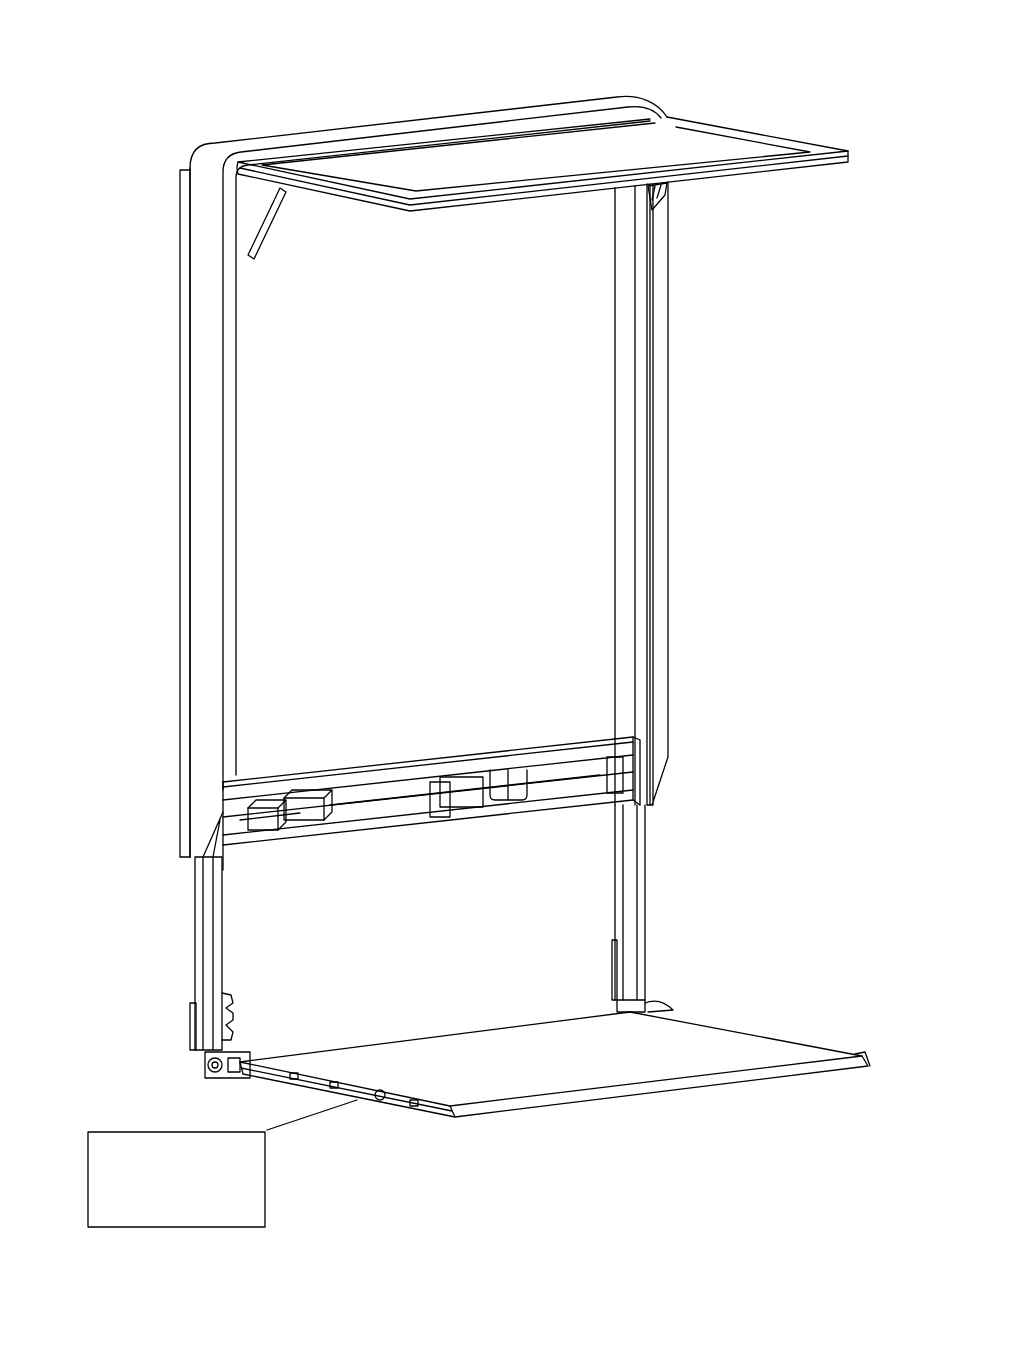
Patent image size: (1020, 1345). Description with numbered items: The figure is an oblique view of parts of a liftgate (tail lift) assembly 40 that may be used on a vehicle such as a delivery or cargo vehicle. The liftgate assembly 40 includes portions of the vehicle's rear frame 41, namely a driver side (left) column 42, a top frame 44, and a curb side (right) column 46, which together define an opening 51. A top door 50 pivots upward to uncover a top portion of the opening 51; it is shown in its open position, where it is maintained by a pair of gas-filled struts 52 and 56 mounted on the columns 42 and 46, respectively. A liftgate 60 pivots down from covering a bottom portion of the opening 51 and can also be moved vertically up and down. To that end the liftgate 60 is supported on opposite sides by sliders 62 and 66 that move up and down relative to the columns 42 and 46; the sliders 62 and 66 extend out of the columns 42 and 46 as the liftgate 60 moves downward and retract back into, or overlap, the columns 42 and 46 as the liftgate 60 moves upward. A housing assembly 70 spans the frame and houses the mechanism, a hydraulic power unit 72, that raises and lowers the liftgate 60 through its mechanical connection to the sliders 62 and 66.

The liftgate assembly 40 is at (228, 62).
The rear frame 41 is at (138, 210).
The driver side column 42 is at (205, 483).
The top frame 44 is at (362, 125).
The curb side column 46 is at (668, 377).
The top door 50 is at (720, 142).
The opening 51 is at (432, 487).
The gas-filled strut 52 is at (250, 247).
The gas-filled strut 56 is at (668, 194).
The liftgate 60 is at (578, 1064).
The slider 62 is at (195, 975).
The slider 66 is at (647, 918).
The housing assembly 70 is at (458, 838).
The hydraulic power unit 72 is at (270, 828).